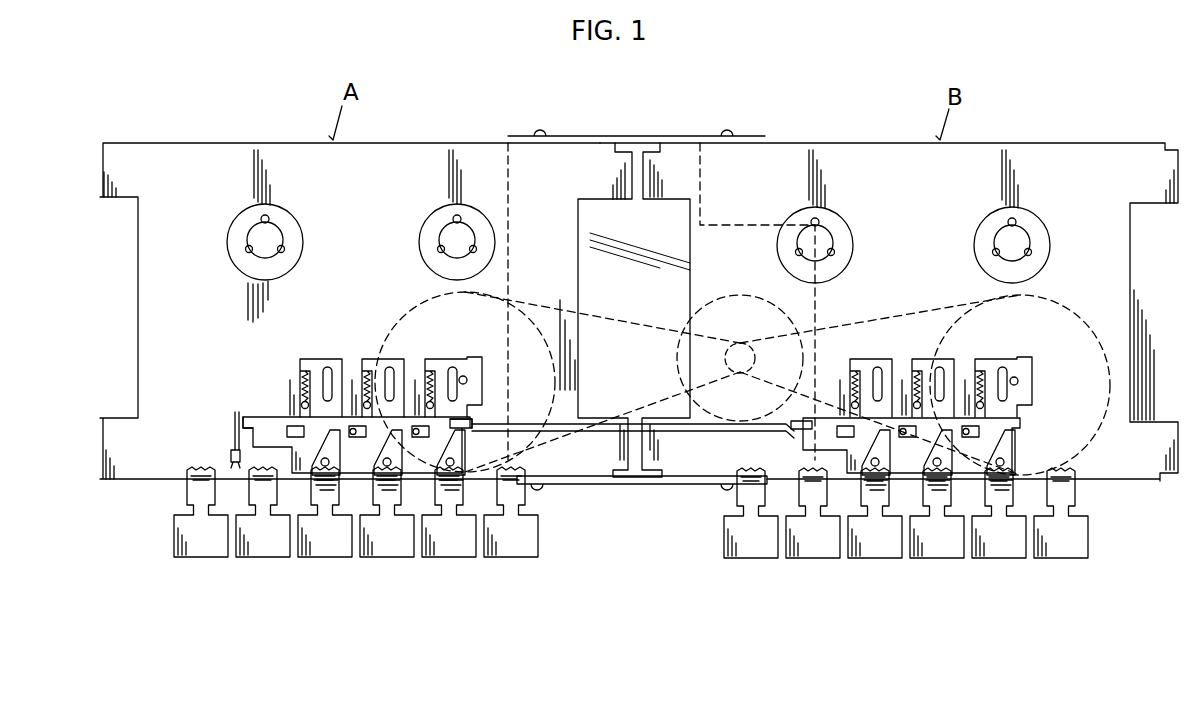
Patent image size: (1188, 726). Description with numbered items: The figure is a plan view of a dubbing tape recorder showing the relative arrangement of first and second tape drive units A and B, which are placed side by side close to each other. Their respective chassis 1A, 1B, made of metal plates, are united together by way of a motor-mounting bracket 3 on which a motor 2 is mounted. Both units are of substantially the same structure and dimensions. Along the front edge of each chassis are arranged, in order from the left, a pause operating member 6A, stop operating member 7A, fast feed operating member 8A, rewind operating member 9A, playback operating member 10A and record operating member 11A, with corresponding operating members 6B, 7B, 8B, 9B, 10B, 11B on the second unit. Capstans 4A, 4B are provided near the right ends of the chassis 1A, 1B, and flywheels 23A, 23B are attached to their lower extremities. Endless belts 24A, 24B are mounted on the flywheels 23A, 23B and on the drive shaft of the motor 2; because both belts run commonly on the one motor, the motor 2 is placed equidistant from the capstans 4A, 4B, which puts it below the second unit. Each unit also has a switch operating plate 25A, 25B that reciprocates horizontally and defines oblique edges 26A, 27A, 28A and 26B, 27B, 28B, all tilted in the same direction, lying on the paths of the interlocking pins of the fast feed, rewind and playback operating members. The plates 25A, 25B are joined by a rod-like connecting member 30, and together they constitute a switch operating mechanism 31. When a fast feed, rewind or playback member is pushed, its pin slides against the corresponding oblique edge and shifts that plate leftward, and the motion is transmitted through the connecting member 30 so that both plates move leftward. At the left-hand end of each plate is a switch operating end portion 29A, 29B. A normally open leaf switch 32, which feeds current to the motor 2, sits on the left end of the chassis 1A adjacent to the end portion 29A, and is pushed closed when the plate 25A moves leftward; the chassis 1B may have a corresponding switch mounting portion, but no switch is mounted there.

The chassis 1A is at (150, 275).
The chassis 1B is at (1132, 292).
The motor 2 is at (740, 295).
The motor-mounting bracket 3 is at (731, 224).
The capstan 4A is at (467, 380).
The capstan 4B is at (1019, 382).
The "pause" operating member 6A is at (193, 493).
The "stop" operating member 7A is at (262, 496).
The "fast feed (FF)" operating member 8A is at (325, 496).
The "rewind" operating member 9A is at (387, 496).
The "playback" operating member 10A is at (450, 496).
The "record" operating member 11A is at (528, 492).
The "pause" operating member 6B is at (735, 498).
The "stop" operating member 7B is at (812, 497).
The "fast feed (FF)" operating member 8B is at (875, 497).
The "rewind" operating member 9B is at (937, 497).
The "playback" operating member 10B is at (1000, 497).
The "record" operating member 11B is at (1078, 495).
The flywheel 23A is at (405, 312).
The flywheel 23B is at (1078, 315).
The endless belt 24A is at (624, 318).
The endless belt 24B is at (893, 317).
The switch operating plate 25A is at (272, 418).
The switch operating plate 25B is at (1025, 435).
The oblique edge 26A is at (318, 458).
The oblique edge 27A is at (378, 458).
The oblique edge 28A is at (440, 458).
The oblique edge 26B is at (868, 458).
The oblique edge 27B is at (930, 458).
The oblique edge 28B is at (990, 458).
The switch operating end portion 29A is at (253, 422).
The switch operating end portion 29B is at (797, 433).
The connecting member 30 is at (600, 432).
The switch operating mechanism 31 is at (681, 469).
The leaf switch 32 is at (235, 432).